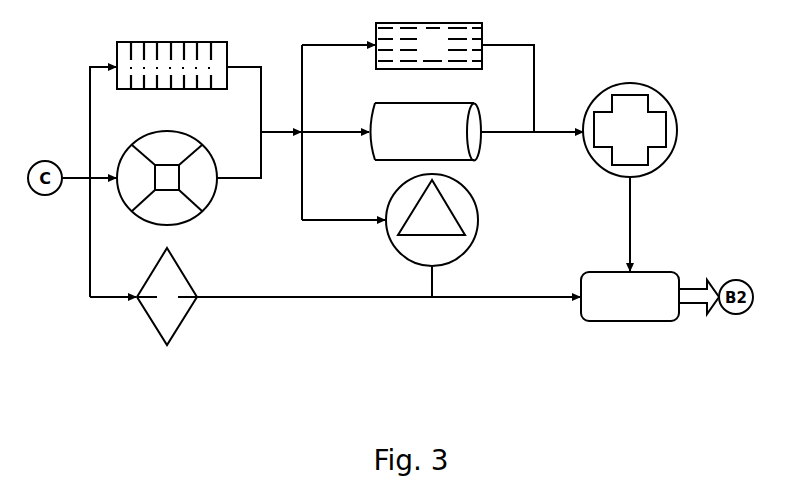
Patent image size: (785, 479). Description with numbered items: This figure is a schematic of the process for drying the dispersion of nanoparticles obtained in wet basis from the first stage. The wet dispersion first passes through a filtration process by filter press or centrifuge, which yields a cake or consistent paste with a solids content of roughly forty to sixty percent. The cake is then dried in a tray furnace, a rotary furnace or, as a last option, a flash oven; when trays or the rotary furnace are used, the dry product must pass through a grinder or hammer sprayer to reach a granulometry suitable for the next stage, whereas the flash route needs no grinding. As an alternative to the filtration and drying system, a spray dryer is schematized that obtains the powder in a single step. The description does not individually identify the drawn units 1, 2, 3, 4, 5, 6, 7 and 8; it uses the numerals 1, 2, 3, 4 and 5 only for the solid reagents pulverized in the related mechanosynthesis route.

The reagent 1 is at (172, 65).
The reagent 2 is at (167, 178).
The reagent 3 is at (429, 46).
The reagent 4 is at (426, 132).
The reagent 5 is at (432, 220).
The filter 6 is at (630, 130).
The valve 7 is at (167, 296).
The mixer 8 is at (630, 296).